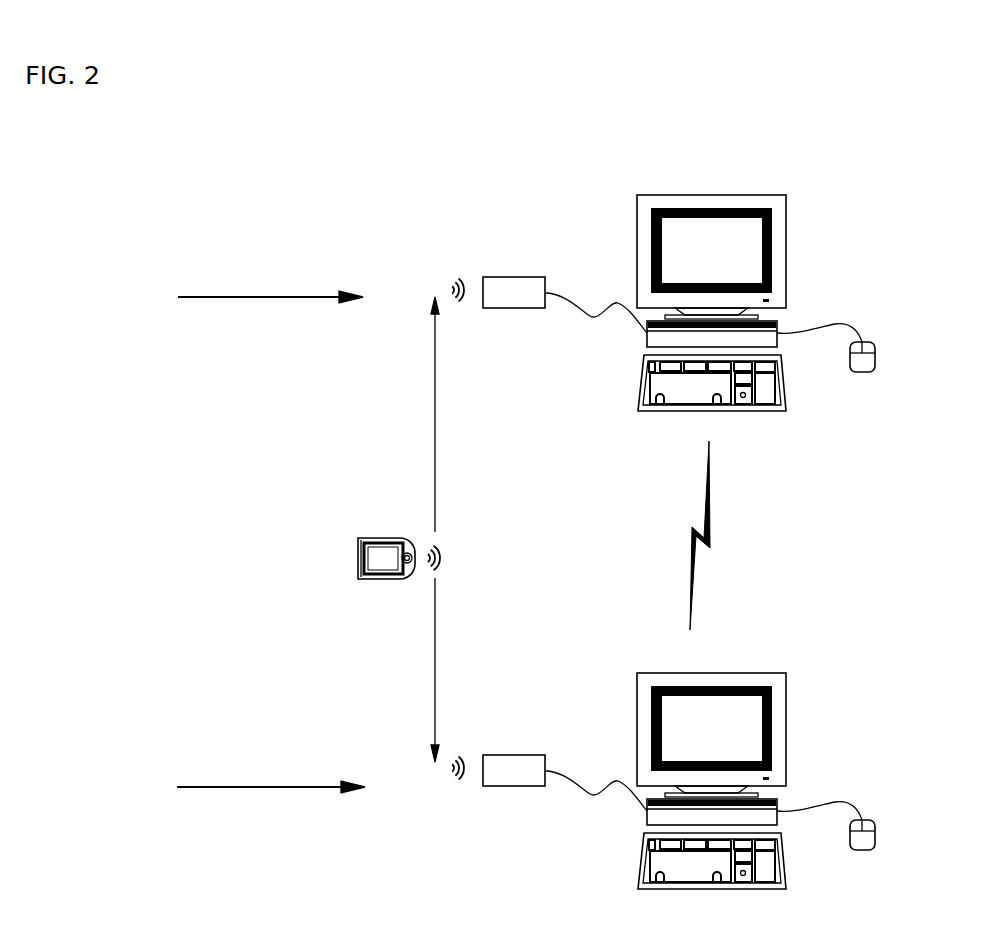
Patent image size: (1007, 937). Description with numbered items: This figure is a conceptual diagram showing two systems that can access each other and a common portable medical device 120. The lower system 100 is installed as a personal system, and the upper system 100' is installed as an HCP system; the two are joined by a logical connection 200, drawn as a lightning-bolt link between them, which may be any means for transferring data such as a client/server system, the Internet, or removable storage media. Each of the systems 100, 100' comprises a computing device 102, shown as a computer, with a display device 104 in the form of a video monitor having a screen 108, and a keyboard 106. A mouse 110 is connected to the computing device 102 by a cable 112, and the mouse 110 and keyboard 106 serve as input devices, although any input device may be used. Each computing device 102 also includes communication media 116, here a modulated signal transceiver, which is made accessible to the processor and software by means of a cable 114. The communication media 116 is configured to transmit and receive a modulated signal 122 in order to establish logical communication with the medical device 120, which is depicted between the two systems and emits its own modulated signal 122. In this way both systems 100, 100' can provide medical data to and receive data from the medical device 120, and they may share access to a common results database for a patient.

The system 100 is at (246, 780).
The second system 100' is at (244, 292).
The computing device 102 is at (779, 322).
The display device 104 is at (784, 226).
The keyboard 106 is at (786, 384).
The screen 108 is at (752, 245).
The mouse 110 is at (875, 356).
The cable 112 is at (855, 326).
The cable 114 is at (588, 318).
The communication media 116 is at (514, 277).
The medical device 120 is at (382, 538).
The modulated signal 122 is at (442, 557).
The logical connection 200 is at (710, 514).